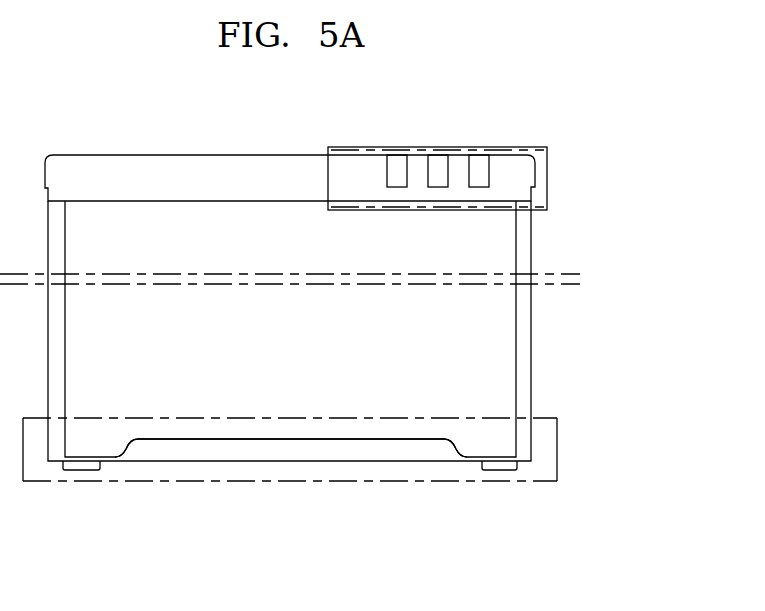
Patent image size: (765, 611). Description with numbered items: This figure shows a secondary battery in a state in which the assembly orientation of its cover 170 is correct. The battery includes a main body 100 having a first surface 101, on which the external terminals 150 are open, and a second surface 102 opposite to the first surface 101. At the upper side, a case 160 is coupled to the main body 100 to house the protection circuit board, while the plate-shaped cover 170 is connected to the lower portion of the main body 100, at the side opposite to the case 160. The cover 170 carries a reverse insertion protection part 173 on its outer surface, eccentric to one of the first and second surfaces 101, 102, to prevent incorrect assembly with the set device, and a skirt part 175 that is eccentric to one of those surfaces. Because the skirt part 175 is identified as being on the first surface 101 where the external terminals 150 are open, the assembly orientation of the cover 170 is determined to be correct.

The main body 100 is at (333, 308).
The first surface 101 is at (508, 340).
The second surface 102 is at (533, 378).
The external terminals 150 is at (437, 160).
The case 160 is at (531, 172).
The cover 170 is at (563, 466).
The reverse insertion protection part 173 is at (500, 470).
The skirt part 175 is at (290, 448).